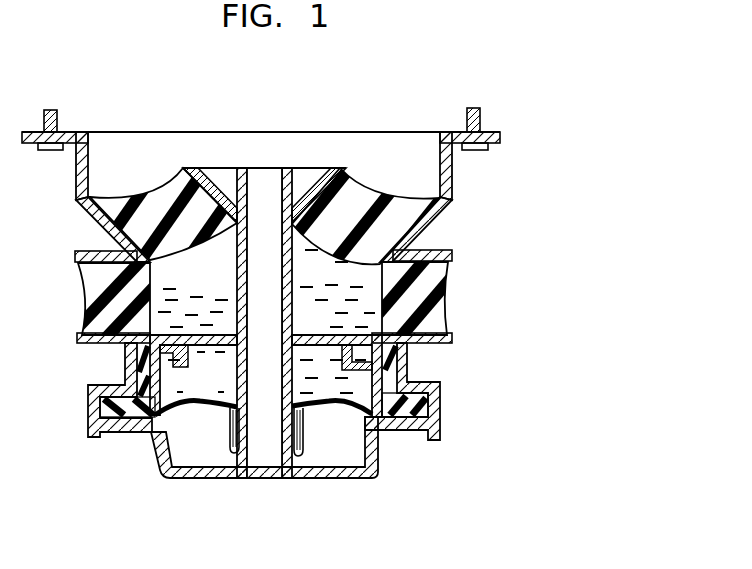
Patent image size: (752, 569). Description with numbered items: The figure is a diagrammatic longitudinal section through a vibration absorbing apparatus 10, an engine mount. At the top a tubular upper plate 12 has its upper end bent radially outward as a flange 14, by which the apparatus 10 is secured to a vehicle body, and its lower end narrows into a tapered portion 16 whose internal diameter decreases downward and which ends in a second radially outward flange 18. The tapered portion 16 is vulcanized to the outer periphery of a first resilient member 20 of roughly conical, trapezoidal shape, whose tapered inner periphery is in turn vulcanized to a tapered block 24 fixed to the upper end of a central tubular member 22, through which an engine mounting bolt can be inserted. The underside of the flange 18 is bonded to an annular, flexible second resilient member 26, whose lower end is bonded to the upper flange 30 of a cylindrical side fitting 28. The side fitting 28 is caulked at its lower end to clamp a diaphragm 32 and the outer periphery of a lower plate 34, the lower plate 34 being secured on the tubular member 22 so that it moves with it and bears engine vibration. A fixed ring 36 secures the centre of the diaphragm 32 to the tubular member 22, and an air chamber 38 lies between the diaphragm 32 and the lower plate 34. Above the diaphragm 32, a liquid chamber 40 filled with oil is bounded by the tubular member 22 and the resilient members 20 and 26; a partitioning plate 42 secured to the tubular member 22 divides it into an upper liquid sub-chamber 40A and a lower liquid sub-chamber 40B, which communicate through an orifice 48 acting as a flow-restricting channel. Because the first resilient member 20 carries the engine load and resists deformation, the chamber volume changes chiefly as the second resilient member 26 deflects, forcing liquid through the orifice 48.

The vibration absorbing apparatus 10 is at (438, 108).
The upper plate 12 is at (453, 171).
The flange 14 is at (494, 132).
The tapered portion 16 is at (437, 224).
The flange 18 is at (446, 252).
The first resilient member 20 is at (357, 197).
The tubular member 22 is at (283, 168).
The tapered block 24 is at (340, 168).
The second resilient member 26 is at (430, 287).
The side fitting 28 is at (405, 358).
The upper flange 30 is at (452, 338).
The diaphragm 32 is at (183, 420).
The lower plate 34 is at (305, 466).
The fixed ring 36 is at (234, 453).
The air chamber 38 is at (341, 448).
The liquid chamber 40 is at (157, 300).
The upper liquid sub-chamber 40A is at (227, 287).
The lower liquid sub-chamber 40B is at (235, 386).
The partitioning plate 42 is at (318, 344).
The orifice 48 is at (125, 360).